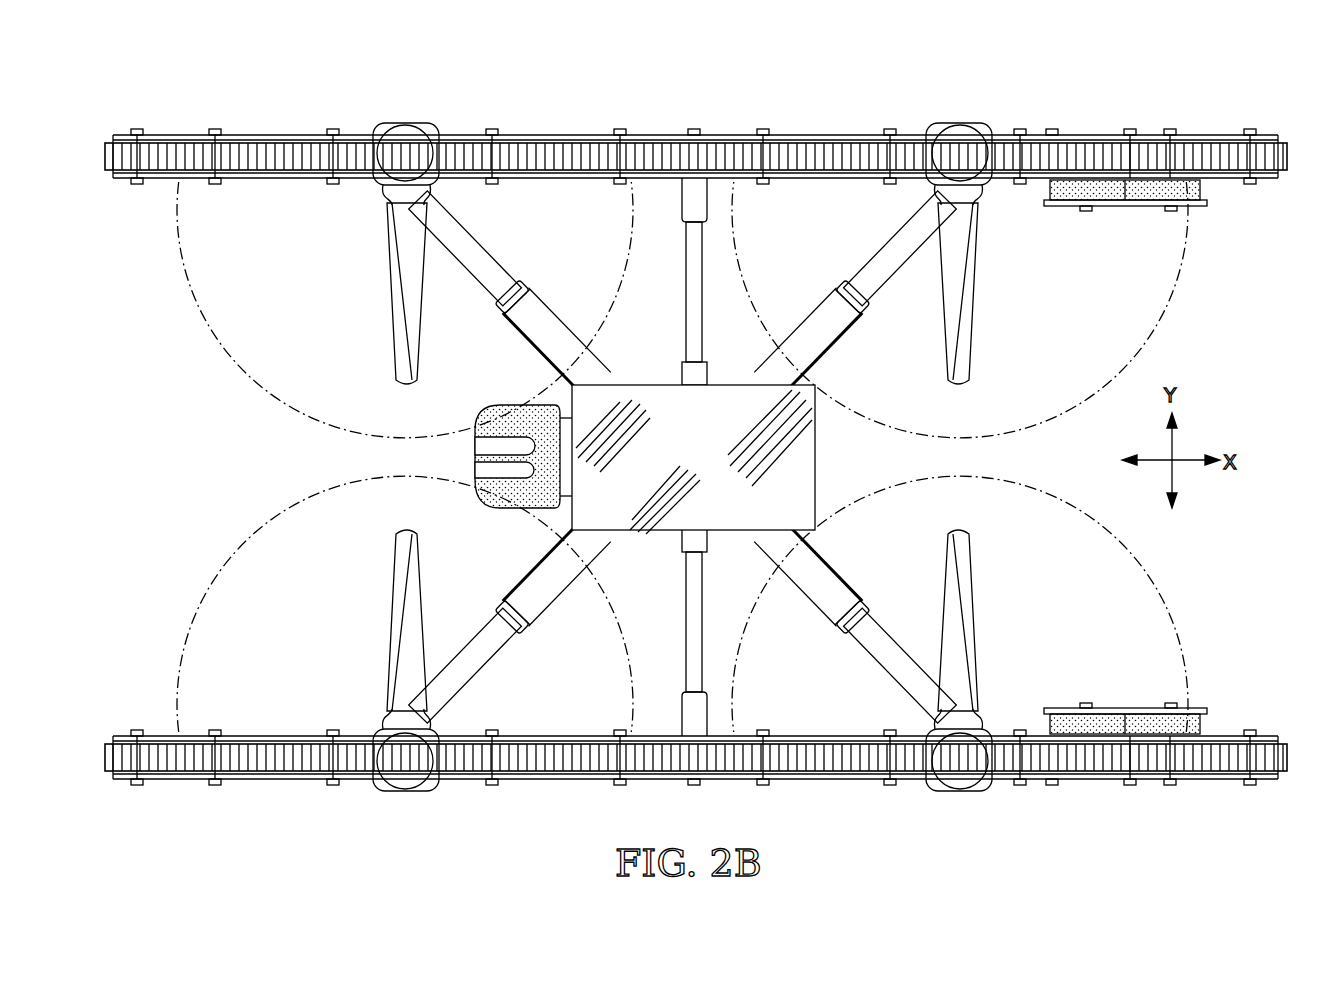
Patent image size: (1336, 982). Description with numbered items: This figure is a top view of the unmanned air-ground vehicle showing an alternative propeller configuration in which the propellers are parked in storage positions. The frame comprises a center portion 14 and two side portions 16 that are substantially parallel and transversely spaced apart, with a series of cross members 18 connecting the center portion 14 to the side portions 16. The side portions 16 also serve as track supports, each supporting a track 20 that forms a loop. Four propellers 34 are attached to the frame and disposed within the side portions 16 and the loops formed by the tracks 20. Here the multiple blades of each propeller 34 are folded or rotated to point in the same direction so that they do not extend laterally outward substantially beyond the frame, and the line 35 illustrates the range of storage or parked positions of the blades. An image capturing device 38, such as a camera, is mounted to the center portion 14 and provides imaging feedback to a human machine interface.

The center portion 14 is at (706, 465).
The side portions 16 is at (742, 128).
The cross members 18 is at (592, 352).
The track 20 is at (1262, 158).
The propellers 34 is at (400, 305).
The line 35 is at (228, 298).
The image capturing device 38 is at (475, 418).